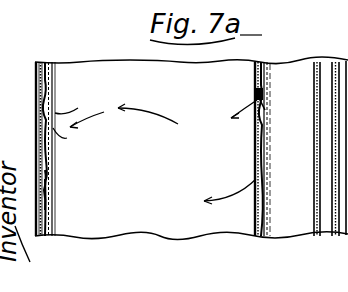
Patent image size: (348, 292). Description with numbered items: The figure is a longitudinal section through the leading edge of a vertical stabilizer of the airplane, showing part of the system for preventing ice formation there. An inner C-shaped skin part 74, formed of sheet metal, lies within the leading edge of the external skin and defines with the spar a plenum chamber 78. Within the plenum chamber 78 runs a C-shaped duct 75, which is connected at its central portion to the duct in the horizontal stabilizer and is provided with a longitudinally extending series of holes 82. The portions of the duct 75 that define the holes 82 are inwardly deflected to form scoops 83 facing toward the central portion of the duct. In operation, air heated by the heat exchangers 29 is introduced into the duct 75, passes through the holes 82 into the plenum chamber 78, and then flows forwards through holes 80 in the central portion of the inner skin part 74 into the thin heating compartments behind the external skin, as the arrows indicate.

The heat exchanger 29 is at (36, 70).
The inner C-shaped skin part 74 is at (147, 224).
The C-shaped duct 75 is at (289, 228).
The plenum chamber 78 is at (175, 184).
The hole 80 is at (50, 190).
The hole 82 is at (256, 96).
The scoop 83 is at (263, 104).